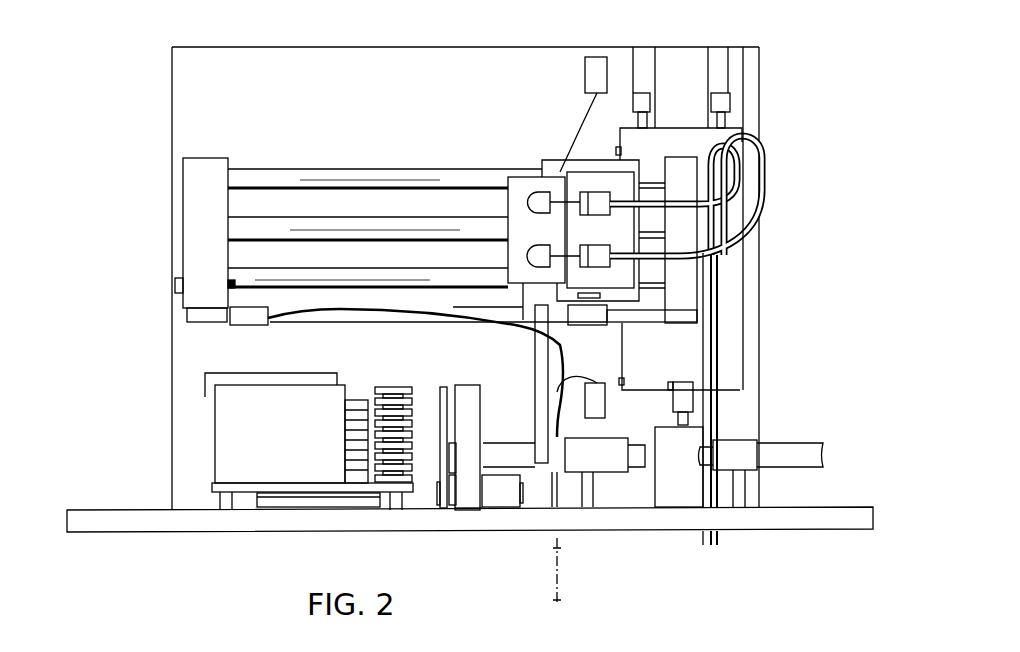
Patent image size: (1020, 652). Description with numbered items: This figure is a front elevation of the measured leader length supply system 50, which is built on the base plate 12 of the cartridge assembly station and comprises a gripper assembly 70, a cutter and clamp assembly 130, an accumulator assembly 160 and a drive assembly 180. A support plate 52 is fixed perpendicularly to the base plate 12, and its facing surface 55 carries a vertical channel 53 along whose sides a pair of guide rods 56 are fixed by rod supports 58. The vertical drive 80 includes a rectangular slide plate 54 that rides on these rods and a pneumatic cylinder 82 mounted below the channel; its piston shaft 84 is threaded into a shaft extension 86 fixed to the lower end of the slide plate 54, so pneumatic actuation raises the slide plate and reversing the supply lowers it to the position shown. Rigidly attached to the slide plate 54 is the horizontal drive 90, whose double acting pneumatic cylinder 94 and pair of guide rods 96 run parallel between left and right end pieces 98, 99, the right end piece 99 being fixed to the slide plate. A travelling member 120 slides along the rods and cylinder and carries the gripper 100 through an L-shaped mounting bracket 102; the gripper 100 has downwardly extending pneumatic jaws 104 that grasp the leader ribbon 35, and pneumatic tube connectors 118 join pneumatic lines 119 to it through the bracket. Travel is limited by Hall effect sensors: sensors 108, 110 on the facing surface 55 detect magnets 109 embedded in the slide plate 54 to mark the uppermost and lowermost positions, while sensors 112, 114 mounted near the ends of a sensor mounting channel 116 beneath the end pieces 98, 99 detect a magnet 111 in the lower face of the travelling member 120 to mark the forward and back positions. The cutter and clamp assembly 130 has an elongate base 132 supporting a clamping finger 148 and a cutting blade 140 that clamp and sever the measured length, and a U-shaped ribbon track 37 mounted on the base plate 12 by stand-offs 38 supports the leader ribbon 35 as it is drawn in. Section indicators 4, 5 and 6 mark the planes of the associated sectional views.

The base plate 12 is at (125, 522).
The leader ribbon 35 is at (800, 452).
The ribbon track 37 is at (745, 462).
The stand-offs 38 is at (740, 497).
The measured leader length supply system 50 is at (160, 213).
The support plate 52 is at (205, 47).
The vertical channel 53 is at (739, 82).
The slide plate 54 is at (730, 133).
The facing surface 55 is at (248, 87).
The guide rods 56 is at (644, 122).
The rod supports 58 is at (643, 93).
The gripper assembly 70 is at (532, 203).
The vertical drive 80 is at (728, 308).
The pneumatic cylinder 82 is at (676, 497).
The piston shaft 84 is at (687, 422).
The shaft extension 86 is at (687, 405).
The horizontal drive 90 is at (380, 191).
The pneumatic cylinder 94 is at (278, 231).
The guide rods 96 is at (305, 172).
The end piece 98 is at (197, 168).
The end piece 99 is at (690, 178).
The gripper 100 is at (516, 218).
The mounting bracket 102 is at (590, 182).
The jaws 104 is at (540, 348).
The Hall effect sensor 108 is at (597, 70).
The magnets 109 is at (617, 150).
The Hall effect sensor 110 is at (597, 398).
The magnet 111 is at (578, 292).
The Hall effect sensor 112 is at (243, 320).
The Hall effect sensor 114 is at (591, 318).
The sensor mounting channel 116 is at (190, 320).
The pneumatic tube connectors 118 is at (598, 220).
The pneumatic lines 119 is at (756, 203).
The travelling member 120 is at (550, 165).
The cutter and clamp assembly 130 is at (465, 511).
The elongate base 132 is at (505, 500).
The cutting blade 140 is at (440, 385).
The clamping finger 148 is at (468, 432).
The accumulator assembly 160 is at (205, 438).
The drive assembly 180 is at (385, 387).
The section line 4- 4 is at (640, 333).
The section line 5- 5 is at (647, 157).
The section line 6- 6 is at (512, 400).